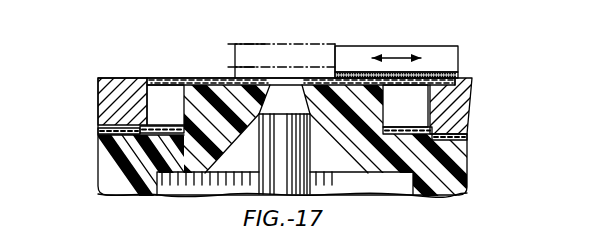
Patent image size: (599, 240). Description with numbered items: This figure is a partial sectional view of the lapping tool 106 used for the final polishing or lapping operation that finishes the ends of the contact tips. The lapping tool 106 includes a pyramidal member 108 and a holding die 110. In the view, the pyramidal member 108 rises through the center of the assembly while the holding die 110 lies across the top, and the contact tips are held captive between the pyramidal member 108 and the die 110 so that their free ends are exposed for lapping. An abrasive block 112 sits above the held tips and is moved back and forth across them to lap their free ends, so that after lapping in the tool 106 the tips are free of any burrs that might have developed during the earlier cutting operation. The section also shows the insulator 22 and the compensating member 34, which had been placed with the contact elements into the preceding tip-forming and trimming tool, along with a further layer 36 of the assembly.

The insulator 22 is at (103, 173).
The compensating member 34 is at (408, 126).
The layer 36 is at (473, 137).
The lapping tool 106 is at (131, 74).
The pyramidal member 108 is at (275, 155).
The holding die 110 is at (196, 77).
The abrasive block 112 is at (458, 49).